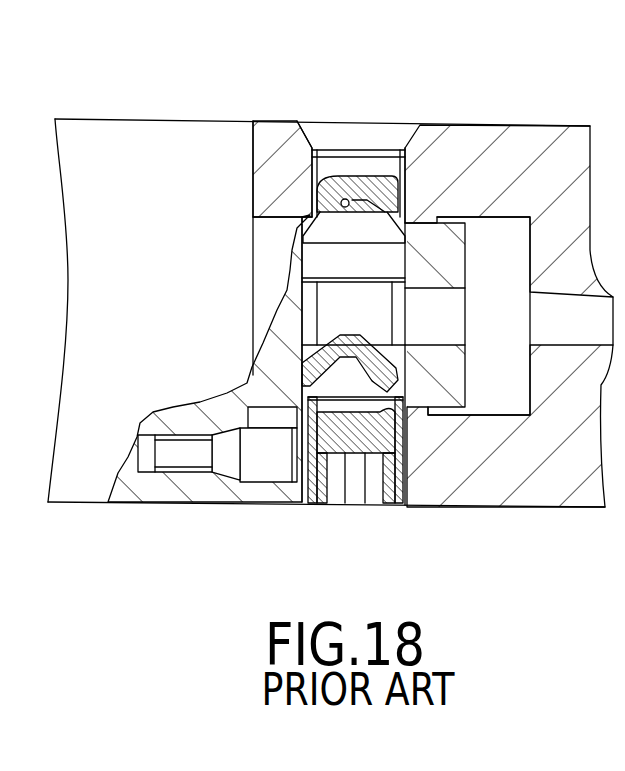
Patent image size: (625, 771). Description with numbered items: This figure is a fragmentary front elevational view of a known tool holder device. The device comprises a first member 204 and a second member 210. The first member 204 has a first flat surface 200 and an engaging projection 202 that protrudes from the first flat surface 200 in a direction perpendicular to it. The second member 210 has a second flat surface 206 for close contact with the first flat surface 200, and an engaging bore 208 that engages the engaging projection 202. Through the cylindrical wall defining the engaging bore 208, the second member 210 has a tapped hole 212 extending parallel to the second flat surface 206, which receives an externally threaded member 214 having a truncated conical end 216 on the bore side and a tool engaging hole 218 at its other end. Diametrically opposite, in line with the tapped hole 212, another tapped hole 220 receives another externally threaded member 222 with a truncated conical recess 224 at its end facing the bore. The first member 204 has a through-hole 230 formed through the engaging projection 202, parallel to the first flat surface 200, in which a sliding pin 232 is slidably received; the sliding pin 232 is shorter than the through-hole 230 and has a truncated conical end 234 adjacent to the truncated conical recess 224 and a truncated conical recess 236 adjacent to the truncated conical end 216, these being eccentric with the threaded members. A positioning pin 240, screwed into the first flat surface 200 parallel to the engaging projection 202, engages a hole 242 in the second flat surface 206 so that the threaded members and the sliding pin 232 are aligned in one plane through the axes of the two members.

The first flat surface 200 is at (262, 143).
The engaging projection 202 is at (447, 247).
The first member 204 is at (130, 128).
The second flat surface 206 is at (235, 482).
The engaging bore 208 is at (497, 411).
The second member 210 is at (553, 145).
The tapped hole 212 is at (398, 470).
The externally threaded member 214 is at (322, 455).
The truncated conical end 216 is at (305, 445).
The tool engaging hole 218 is at (378, 480).
The tapped hole 220 is at (325, 143).
The externally threaded member 222 is at (392, 160).
The truncated conical recess 224 is at (358, 163).
The through-hole 230 is at (303, 310).
The sliding pin 232 is at (370, 305).
The truncated conical end 234 is at (310, 222).
The truncated conical recess 236 is at (402, 392).
The positioning pin 240 is at (243, 461).
The hole 242 is at (288, 478).